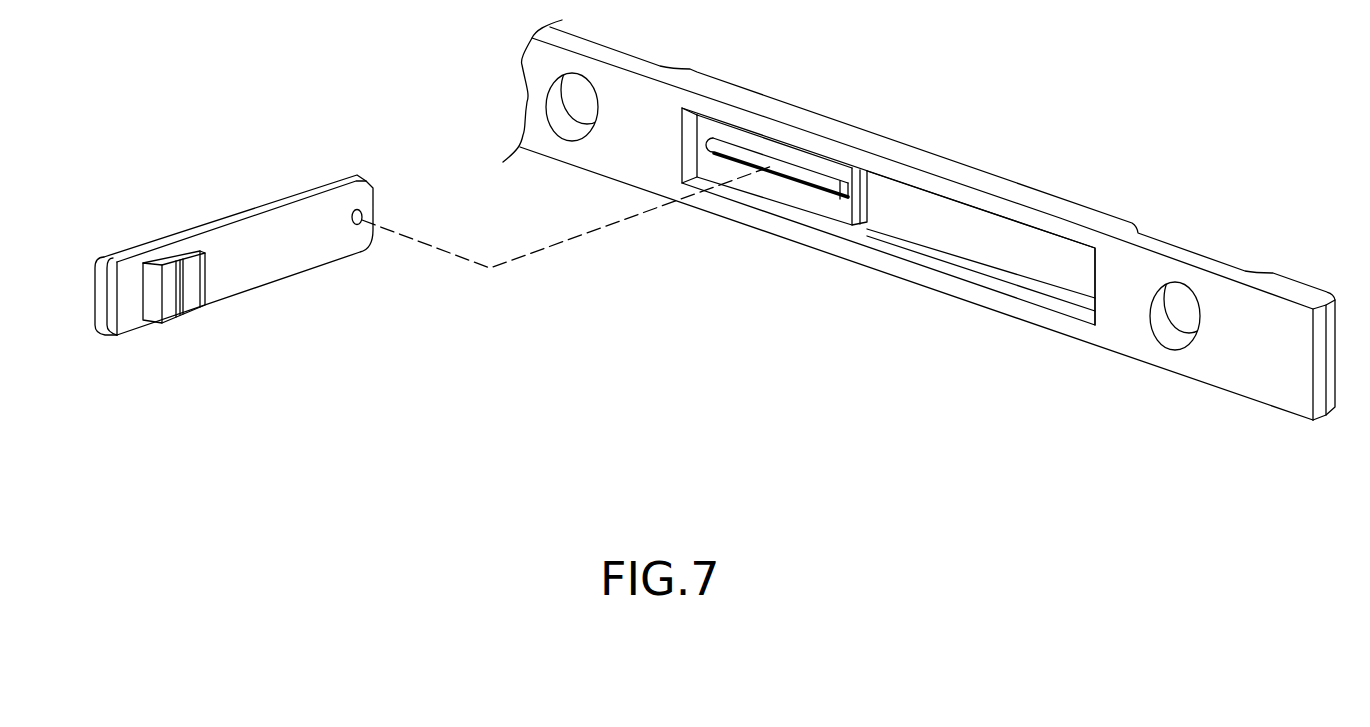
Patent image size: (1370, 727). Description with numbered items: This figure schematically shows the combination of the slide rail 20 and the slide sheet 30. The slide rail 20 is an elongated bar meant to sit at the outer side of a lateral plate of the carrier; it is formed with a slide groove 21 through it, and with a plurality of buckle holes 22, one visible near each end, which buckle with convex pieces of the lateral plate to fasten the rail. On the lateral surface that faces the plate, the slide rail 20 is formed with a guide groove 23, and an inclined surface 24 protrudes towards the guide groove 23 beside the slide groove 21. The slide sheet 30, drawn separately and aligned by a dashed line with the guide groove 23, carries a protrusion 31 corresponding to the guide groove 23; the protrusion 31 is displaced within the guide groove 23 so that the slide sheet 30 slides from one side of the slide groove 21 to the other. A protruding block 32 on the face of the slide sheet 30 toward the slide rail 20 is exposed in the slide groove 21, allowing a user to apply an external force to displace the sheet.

The slide rail 20 is at (1050, 181).
The slide groove 21 is at (1005, 240).
The buckle holes 22 is at (1182, 317).
The guide groove 23 is at (790, 170).
The inclined surface 24 is at (847, 196).
The slide sheet 30 is at (232, 207).
The protrusion 31 is at (362, 214).
The protruding block 32 is at (184, 280).